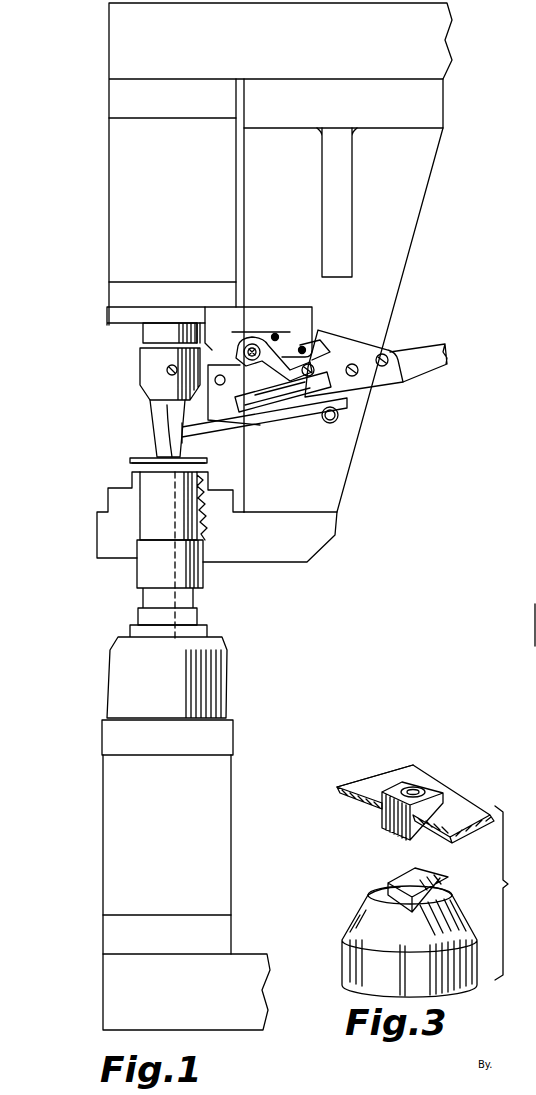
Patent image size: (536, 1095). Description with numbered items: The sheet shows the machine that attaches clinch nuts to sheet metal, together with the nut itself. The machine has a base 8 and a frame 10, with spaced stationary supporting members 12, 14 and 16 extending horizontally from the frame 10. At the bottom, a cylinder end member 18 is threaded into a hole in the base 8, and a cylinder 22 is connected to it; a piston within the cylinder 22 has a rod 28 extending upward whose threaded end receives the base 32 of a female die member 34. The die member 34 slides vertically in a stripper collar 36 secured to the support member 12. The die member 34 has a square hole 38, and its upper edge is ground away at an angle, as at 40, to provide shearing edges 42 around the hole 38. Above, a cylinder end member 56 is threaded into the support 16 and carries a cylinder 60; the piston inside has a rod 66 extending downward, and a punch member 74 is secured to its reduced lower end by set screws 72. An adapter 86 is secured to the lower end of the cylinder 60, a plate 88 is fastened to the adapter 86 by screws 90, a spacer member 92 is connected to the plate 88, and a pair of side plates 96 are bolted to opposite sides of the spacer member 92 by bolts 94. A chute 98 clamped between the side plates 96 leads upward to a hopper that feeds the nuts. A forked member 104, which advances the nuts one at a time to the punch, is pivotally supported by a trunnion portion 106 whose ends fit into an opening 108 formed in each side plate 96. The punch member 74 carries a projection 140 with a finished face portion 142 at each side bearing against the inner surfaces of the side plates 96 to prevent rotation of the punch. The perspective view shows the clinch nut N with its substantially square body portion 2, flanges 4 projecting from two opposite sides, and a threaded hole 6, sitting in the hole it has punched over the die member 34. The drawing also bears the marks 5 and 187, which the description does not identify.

In FIG. 1, the stationary supporting member 16 is at (127, 40).
In FIG. 1, the stationary supporting member 14 is at (433, 115).
In FIG. 1, the frame 10 is at (393, 247).
In FIG. 1, the cylinder end member 56 is at (127, 104).
In FIG. 1, the cylinder 60 is at (128, 182).
In FIG. 1, the adapter 86 is at (122, 295).
In FIG. 1, the rod 66 is at (157, 333).
In FIG. 1, the set screws 72 is at (168, 370).
In FIG. 1, the punch member 74 is at (157, 387).
In FIG. 1, the strip 5 is at (138, 460).
In FIG. 3, the strip 5 is at (360, 782).
In FIG. 1, the finished face portion 142 is at (205, 340).
In FIG. 1, the projection 140 is at (212, 345).
In FIG. 1, the bolts 94 is at (276, 334).
In FIG. 1, the plate 88 is at (305, 322).
In FIG. 1, the spacer member 92 is at (303, 342).
In FIG. 1, the opening 108 is at (312, 366).
In FIG. 1, the trunnion portion 106 is at (313, 370).
In FIG. 1, the side plates 96 is at (380, 377).
In FIG. 1, the chute 98 is at (415, 360).
In FIG. 1, the forked member 104 is at (234, 395).
In FIG. 1, the shearing edges 42 is at (203, 462).
In FIG. 3, the shearing edges 42 is at (437, 878).
In FIG. 1, the stripper collar 36 is at (133, 475).
In FIG. 1, the female die member 34 is at (152, 502).
In FIG. 3, the female die member 34 is at (342, 938).
In FIG. 1, the base 32 is at (152, 575).
In FIG. 1, the rod 28 is at (185, 624).
In FIG. 1, the cylinder 22 is at (120, 843).
In FIG. 1, the cylinder end member 18 is at (132, 937).
In FIG. 1, the base 8 is at (125, 997).
In FIG. 1, the stationary supporting member 12 is at (287, 547).
In FIG. 1, the member 187 is at (535, 470).
In FIG. 1, the screws 90 is at (535, 668).
In FIG. 3, the flanges 4 is at (390, 785).
In FIG. 3, the threaded hole 6 is at (415, 788).
In FIG. 3, the clinch nut N is at (395, 812).
In FIG. 3, the body portion 2 is at (393, 827).
In FIG. 3, the square hole 38 is at (418, 877).
In FIG. 3, the ground-away angled upper edge 40 is at (385, 890).